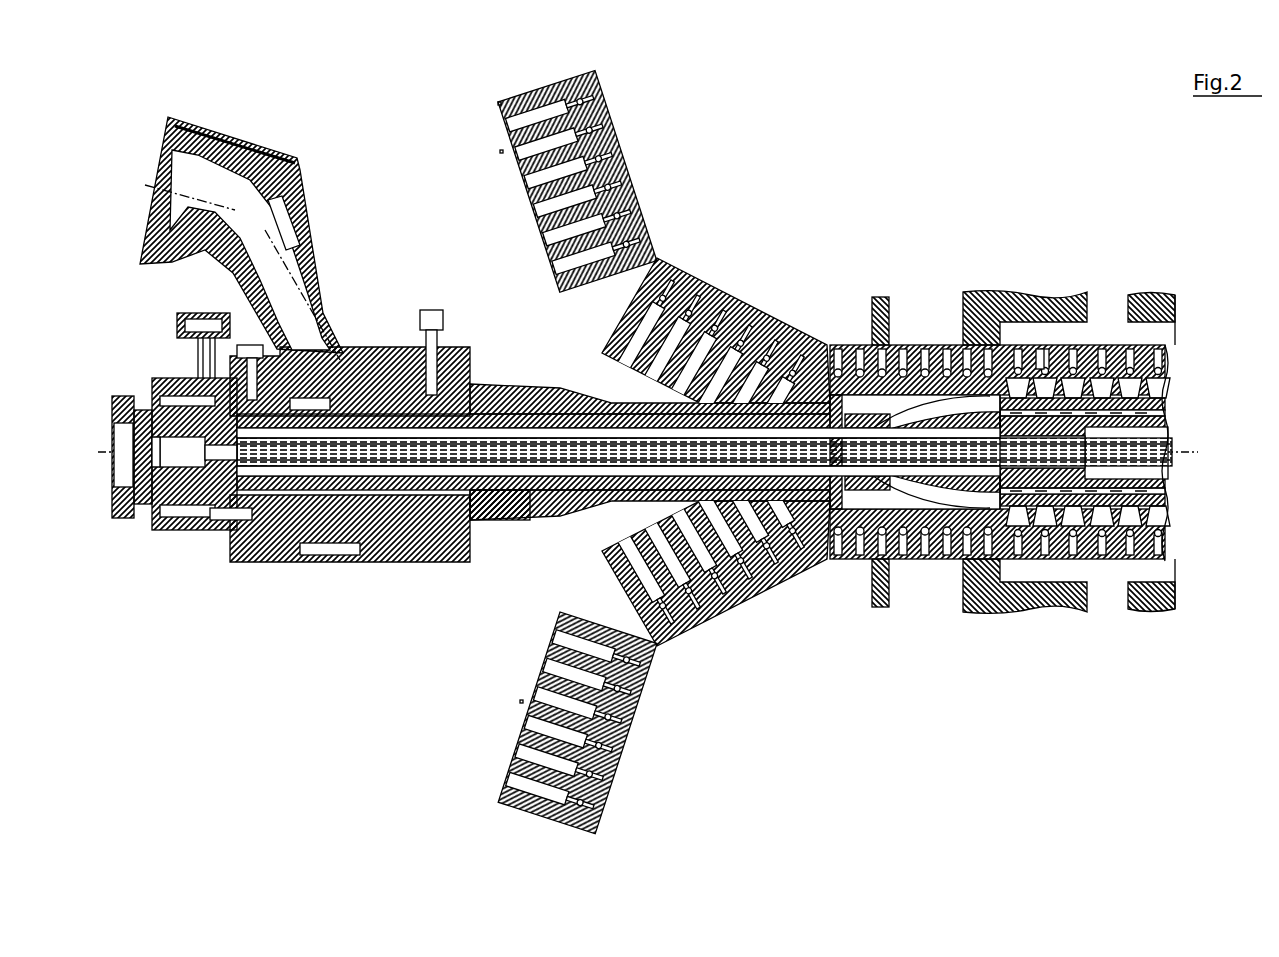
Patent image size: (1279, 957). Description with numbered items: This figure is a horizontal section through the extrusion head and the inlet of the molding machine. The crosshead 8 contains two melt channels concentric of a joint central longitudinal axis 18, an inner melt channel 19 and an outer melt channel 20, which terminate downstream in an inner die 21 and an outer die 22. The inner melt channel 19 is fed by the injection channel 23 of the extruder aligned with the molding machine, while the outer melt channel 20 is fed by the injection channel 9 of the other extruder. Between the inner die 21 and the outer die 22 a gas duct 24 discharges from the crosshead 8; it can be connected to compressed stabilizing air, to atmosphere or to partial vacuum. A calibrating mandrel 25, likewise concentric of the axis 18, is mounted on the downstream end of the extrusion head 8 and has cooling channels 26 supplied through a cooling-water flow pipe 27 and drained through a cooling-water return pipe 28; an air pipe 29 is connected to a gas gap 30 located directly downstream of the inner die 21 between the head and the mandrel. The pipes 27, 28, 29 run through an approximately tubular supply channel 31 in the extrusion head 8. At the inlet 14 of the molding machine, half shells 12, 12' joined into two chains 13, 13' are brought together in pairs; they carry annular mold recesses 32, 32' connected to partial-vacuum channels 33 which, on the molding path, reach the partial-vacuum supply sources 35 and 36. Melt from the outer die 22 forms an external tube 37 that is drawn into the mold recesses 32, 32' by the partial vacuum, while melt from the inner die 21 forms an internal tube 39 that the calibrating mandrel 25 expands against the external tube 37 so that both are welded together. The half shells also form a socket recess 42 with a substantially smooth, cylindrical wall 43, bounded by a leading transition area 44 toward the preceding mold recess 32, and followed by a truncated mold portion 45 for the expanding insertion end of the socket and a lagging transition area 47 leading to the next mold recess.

The crosshead 8 is at (397, 338).
The injection channel 9 is at (290, 263).
The half shell 12 is at (600, 181).
The half shell 12' is at (628, 723).
The chain 13 is at (716, 315).
The chain 13' is at (716, 565).
The inlet 14 is at (845, 325).
The central longitudinal axis 18 is at (126, 455).
The inner melt channel 19 is at (534, 400).
The outer melt channel 20 is at (500, 397).
The inner die 21 is at (987, 380).
The outer die 22 is at (882, 400).
The injection channel 23 is at (122, 437).
The gas duct 24 is at (566, 412).
The calibrating mandrel 25 is at (1168, 503).
The cooling channels 26 is at (1168, 403).
The cooling-water flow pipe 27 is at (507, 520).
The cooling-water return pipe 28 is at (543, 515).
The air pipe 29 is at (580, 508).
The gas gap 30 is at (992, 530).
The supply channel 31 is at (296, 473).
The annular mold recess 32 is at (494, 172).
The annular mold recess 32' is at (498, 695).
The partial-vacuum channels 33 is at (613, 140).
The partial-vacuum supply source 35 is at (940, 596).
The partial-vacuum supply source 36 is at (1122, 592).
The external tube 37 is at (955, 378).
The internal tube 39 is at (1040, 357).
The socket recess 42 is at (884, 520).
The cylindrical wall 43 is at (917, 390).
The transition area 44 is at (1010, 353).
The truncated mold portion 45 is at (862, 545).
The transition area 47 is at (843, 383).